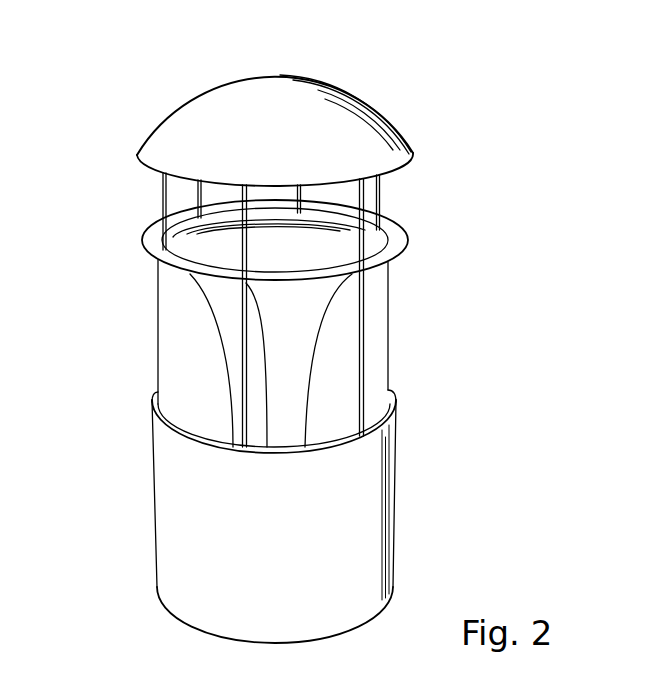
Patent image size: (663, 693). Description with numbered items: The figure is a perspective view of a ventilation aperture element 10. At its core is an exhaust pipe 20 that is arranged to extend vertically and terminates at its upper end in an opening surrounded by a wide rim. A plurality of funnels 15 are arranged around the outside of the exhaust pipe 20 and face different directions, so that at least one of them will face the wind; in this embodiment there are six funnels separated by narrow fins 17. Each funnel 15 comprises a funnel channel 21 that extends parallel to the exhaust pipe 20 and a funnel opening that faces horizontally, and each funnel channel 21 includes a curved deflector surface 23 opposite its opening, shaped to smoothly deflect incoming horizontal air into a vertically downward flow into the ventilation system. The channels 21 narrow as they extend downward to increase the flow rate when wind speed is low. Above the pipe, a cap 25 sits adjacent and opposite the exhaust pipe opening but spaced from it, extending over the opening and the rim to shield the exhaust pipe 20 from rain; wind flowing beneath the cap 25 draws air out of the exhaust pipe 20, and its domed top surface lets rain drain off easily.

The ventilation aperture element 10 is at (326, 351).
The funnel 15 is at (403, 341).
The fin 17 is at (342, 392).
The exhaust pipe 20 is at (267, 240).
The funnel channel 21 is at (198, 423).
The curved deflector surface 23 is at (228, 300).
The cap 25 is at (208, 133).